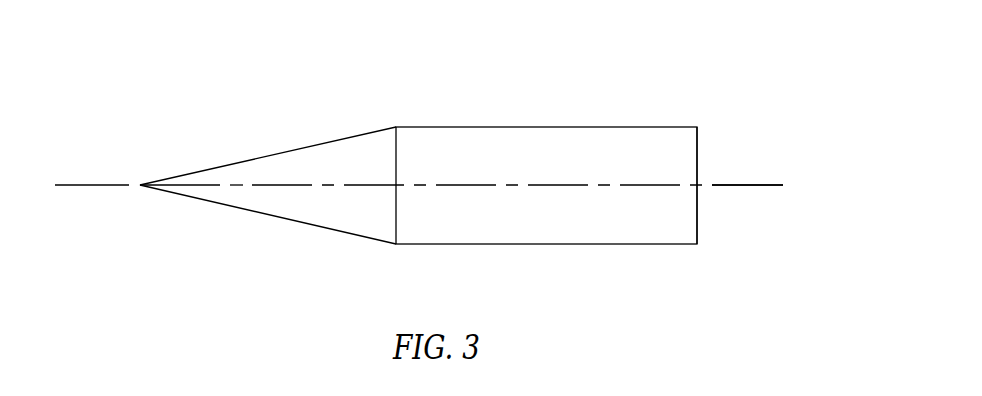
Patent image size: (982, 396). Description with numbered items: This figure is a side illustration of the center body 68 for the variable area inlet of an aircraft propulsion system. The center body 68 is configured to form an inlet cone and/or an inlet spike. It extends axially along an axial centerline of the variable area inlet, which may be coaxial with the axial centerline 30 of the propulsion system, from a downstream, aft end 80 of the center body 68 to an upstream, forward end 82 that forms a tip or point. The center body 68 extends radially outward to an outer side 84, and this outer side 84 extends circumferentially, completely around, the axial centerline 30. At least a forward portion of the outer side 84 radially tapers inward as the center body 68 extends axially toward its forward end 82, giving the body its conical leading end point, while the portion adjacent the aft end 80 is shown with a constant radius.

The axial centerline 30 is at (780, 185).
The center body 68 is at (451, 134).
The outer side 84 is at (432, 127).
The forward end 82 is at (140, 185).
The aft end 80 is at (697, 222).